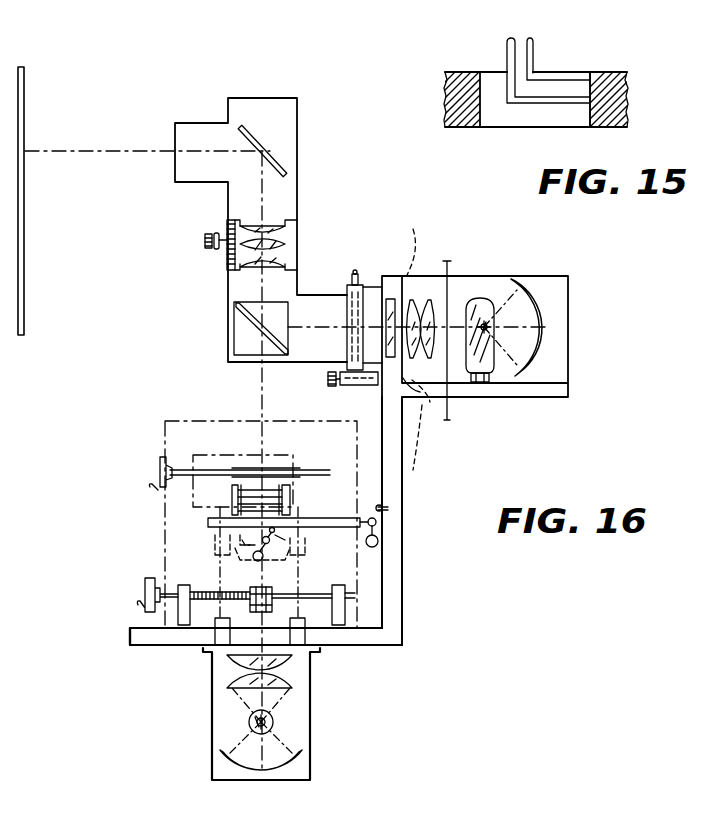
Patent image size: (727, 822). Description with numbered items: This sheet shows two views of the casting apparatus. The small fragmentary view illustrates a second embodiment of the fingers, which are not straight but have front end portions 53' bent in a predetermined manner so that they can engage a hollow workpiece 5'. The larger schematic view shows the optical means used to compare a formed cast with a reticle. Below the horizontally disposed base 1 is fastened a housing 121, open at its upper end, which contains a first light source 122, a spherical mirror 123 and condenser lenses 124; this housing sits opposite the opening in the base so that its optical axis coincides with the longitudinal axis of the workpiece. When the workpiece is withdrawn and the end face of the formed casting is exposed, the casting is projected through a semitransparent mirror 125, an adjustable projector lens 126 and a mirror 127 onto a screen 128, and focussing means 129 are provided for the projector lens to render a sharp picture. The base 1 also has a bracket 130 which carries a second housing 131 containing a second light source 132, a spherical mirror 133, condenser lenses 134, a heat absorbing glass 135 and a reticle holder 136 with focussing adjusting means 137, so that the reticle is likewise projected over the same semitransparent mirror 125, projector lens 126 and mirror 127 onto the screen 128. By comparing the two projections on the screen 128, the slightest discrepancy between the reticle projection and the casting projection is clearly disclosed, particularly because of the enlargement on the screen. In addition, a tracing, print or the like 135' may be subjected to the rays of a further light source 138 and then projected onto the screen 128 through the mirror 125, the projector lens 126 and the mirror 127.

In FIG. 16, the base 1 is at (372, 637).
In FIG. 15, the hollow workpiece 5' is at (630, 99).
In FIG. 15, the bent front end portions 53' is at (553, 68).
In FIG. 16, the housing 121 is at (302, 712).
In FIG. 16, the first light source 122 is at (250, 722).
In FIG. 16, the spherical mirror 123 is at (300, 761).
In FIG. 16, the condenser lenses 124 is at (235, 681).
In FIG. 16, the semitransparent mirror 125 is at (247, 318).
In FIG. 16, the adjustable projector lens 126 is at (250, 222).
In FIG. 16, the mirror 127 is at (285, 160).
In FIG. 16, the screen 128 is at (25, 118).
In FIG. 16, the focussing means 129 is at (205, 244).
In FIG. 16, the bracket 130 is at (395, 557).
In FIG. 16, the second housing 131 is at (480, 392).
In FIG. 16, the second light source 132 is at (478, 298).
In FIG. 16, the spherical mirror 133 is at (547, 343).
In FIG. 16, the condenser lenses 134 is at (421, 300).
In FIG. 16, the heat absorbing glass 135 is at (387, 300).
In FIG. 16, the tracing 135' is at (450, 365).
In FIG. 16, the reticle holder 136 is at (360, 374).
In FIG. 16, the focussing adjusting means 137 is at (326, 380).
In FIG. 16, the light source 138 is at (423, 351).